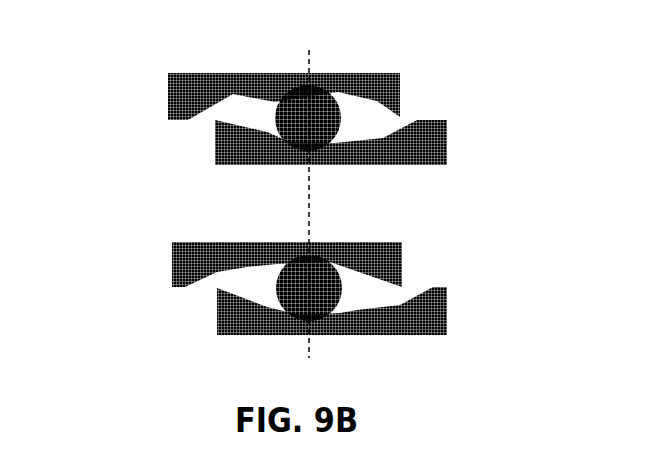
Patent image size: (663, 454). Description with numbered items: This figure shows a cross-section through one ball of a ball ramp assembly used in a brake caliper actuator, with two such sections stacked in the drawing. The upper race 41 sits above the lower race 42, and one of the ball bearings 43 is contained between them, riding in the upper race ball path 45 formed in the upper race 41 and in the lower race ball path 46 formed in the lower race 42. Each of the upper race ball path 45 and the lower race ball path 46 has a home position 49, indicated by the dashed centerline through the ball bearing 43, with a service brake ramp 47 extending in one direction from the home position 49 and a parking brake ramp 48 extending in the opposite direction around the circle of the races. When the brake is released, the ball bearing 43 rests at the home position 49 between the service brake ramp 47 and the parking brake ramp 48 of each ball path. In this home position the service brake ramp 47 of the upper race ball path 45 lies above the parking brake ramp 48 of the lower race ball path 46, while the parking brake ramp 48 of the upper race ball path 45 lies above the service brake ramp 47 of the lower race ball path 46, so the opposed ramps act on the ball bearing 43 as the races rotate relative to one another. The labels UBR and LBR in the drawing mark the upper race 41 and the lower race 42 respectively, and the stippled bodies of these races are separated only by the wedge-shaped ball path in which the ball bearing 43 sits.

The upper race 41 is at (183, 85).
The lower race 42 is at (238, 158).
The ball bearing 43 is at (280, 104).
The upper race ball path 45 is at (363, 125).
The lower race ball path 46 is at (418, 132).
The service brake ramp 47 is at (357, 103).
The parking brake ramp 48 is at (272, 93).
The home position 49 is at (308, 202).
The upper bearing race UBR is at (168, 96).
The lower bearing race LBR is at (216, 146).